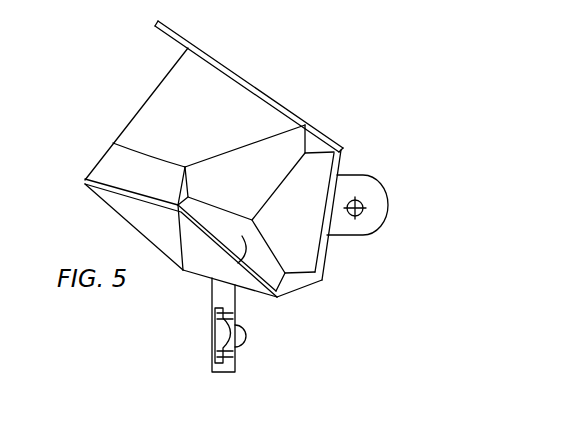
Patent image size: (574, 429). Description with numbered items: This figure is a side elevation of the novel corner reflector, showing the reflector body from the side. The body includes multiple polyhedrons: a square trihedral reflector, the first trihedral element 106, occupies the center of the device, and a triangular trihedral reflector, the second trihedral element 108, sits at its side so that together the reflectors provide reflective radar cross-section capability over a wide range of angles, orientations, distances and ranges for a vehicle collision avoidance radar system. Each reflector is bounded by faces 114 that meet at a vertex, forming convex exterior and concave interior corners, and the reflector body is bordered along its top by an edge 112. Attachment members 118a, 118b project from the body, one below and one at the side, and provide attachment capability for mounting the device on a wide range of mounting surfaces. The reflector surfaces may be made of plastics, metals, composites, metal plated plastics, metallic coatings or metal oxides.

The first trihedral element 106 is at (112, 124).
The second trihedral element 108 is at (331, 284).
The edge 112 is at (223, 73).
The face 114 is at (173, 77).
The attachment member 118a is at (210, 365).
The attachment member 118b is at (353, 191).